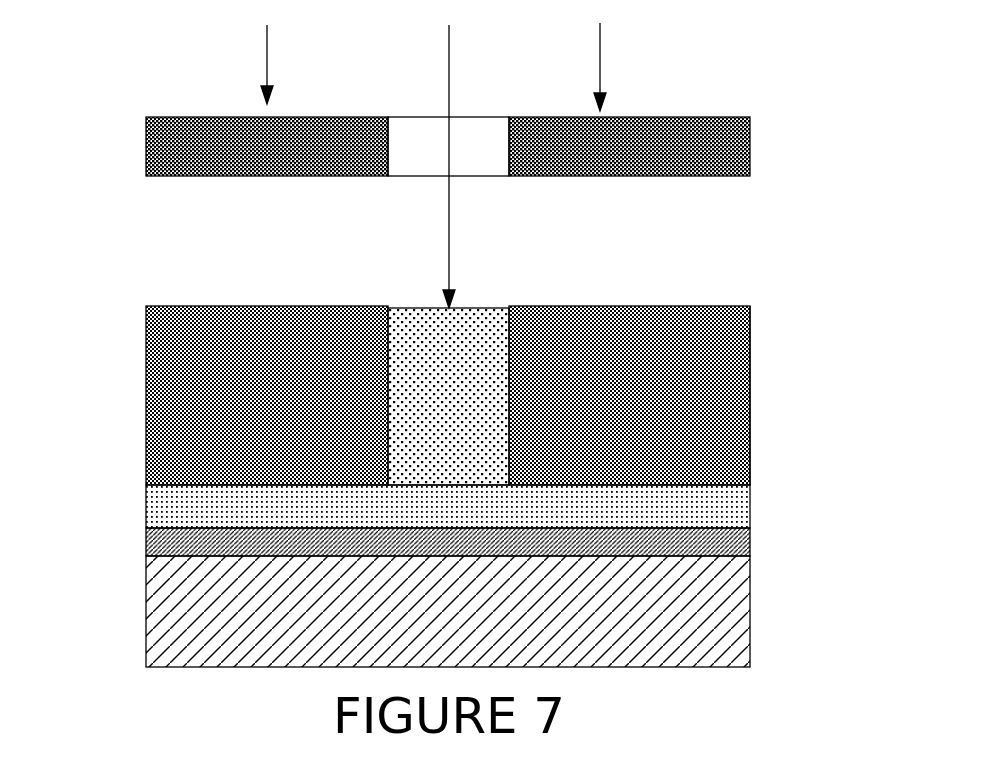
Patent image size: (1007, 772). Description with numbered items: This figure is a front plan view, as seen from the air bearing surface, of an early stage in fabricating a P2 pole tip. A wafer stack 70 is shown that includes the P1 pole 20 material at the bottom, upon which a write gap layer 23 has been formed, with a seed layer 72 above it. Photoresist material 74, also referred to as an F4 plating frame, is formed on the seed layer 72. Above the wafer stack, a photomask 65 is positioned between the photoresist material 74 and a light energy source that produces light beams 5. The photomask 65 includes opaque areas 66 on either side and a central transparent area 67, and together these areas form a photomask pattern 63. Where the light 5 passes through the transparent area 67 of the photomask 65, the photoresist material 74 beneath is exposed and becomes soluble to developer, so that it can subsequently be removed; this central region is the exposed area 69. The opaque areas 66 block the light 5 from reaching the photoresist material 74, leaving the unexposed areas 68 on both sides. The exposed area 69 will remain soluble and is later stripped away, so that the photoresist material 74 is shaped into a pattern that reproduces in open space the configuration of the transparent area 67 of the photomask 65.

The light beams 5 is at (446, 156).
The P1 pole 20 is at (751, 575).
The write gap layer 23 is at (751, 545).
The photomask pattern 63 is at (407, 94).
The photomask 65 is at (420, 152).
The opaque areas 66 is at (298, 177).
The transparent areas 67 is at (418, 178).
The unexposed areas 68 is at (468, 352).
The exposed areas 69 is at (480, 310).
The wafer stack 70 is at (450, 458).
The seed layer 72 is at (751, 515).
The photoresist material 74 is at (819, 387).